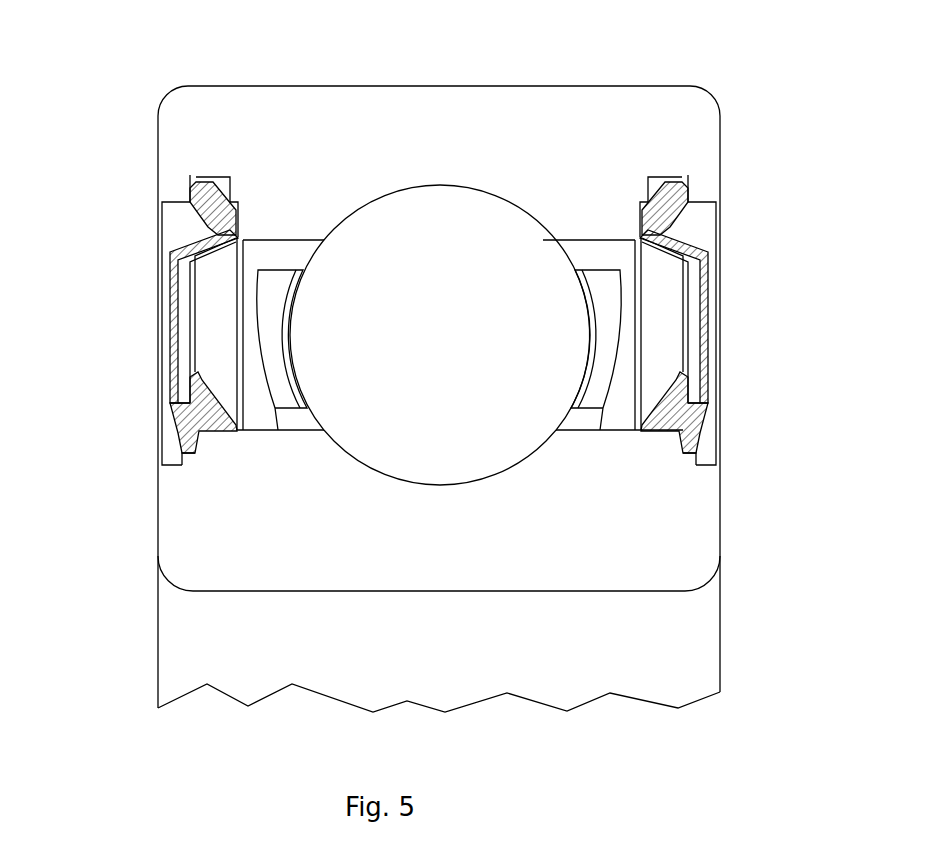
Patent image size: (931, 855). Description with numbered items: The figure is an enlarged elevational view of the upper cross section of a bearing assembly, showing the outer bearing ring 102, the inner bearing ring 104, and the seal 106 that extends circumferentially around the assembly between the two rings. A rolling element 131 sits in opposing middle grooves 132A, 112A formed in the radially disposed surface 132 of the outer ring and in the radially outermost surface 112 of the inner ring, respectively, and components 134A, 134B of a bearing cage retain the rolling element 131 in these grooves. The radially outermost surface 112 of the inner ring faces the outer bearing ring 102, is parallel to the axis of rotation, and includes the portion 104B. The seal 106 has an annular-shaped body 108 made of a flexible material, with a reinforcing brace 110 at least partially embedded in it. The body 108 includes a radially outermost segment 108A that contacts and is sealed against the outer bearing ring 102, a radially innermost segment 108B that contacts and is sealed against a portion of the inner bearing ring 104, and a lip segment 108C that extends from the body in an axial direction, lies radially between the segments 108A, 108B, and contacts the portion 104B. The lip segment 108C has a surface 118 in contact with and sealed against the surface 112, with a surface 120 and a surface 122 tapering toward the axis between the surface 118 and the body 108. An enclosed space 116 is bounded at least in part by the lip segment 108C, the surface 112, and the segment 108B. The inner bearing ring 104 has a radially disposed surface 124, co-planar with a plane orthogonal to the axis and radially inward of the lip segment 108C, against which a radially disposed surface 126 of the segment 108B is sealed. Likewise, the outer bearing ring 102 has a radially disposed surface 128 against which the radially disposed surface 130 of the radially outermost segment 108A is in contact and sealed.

The outer bearing ring 102 is at (652, 86).
The inner bearing ring 104 is at (317, 657).
The portion of inner bearing ring 104B is at (675, 432).
The seal 106 is at (170, 283).
The annular-shaped body 108 is at (170, 375).
The radially outermost segment 108A is at (168, 193).
The radially innermost segment 108B is at (705, 442).
The lip segment 108C is at (672, 410).
The reinforcing brace 110 is at (187, 330).
The radially outermost surface 112 is at (612, 432).
The middle groove 112A is at (440, 487).
The enclosed space 116 is at (682, 430).
The surface of lip segment 118 is at (197, 423).
The tapering surface 120 is at (190, 425).
The tapering surface 122 is at (200, 428).
The radially disposed surface 124 is at (690, 447).
The radially disposed surface 126 is at (700, 452).
The radially disposed surface 128 is at (192, 185).
The radially disposed surface 130 is at (190, 172).
The rolling element 131 is at (425, 345).
The radially disposed surface 132 is at (276, 240).
The middle groove 132A is at (472, 188).
The component of bearing cage 134A is at (285, 287).
The component of bearing cage 134B is at (598, 287).